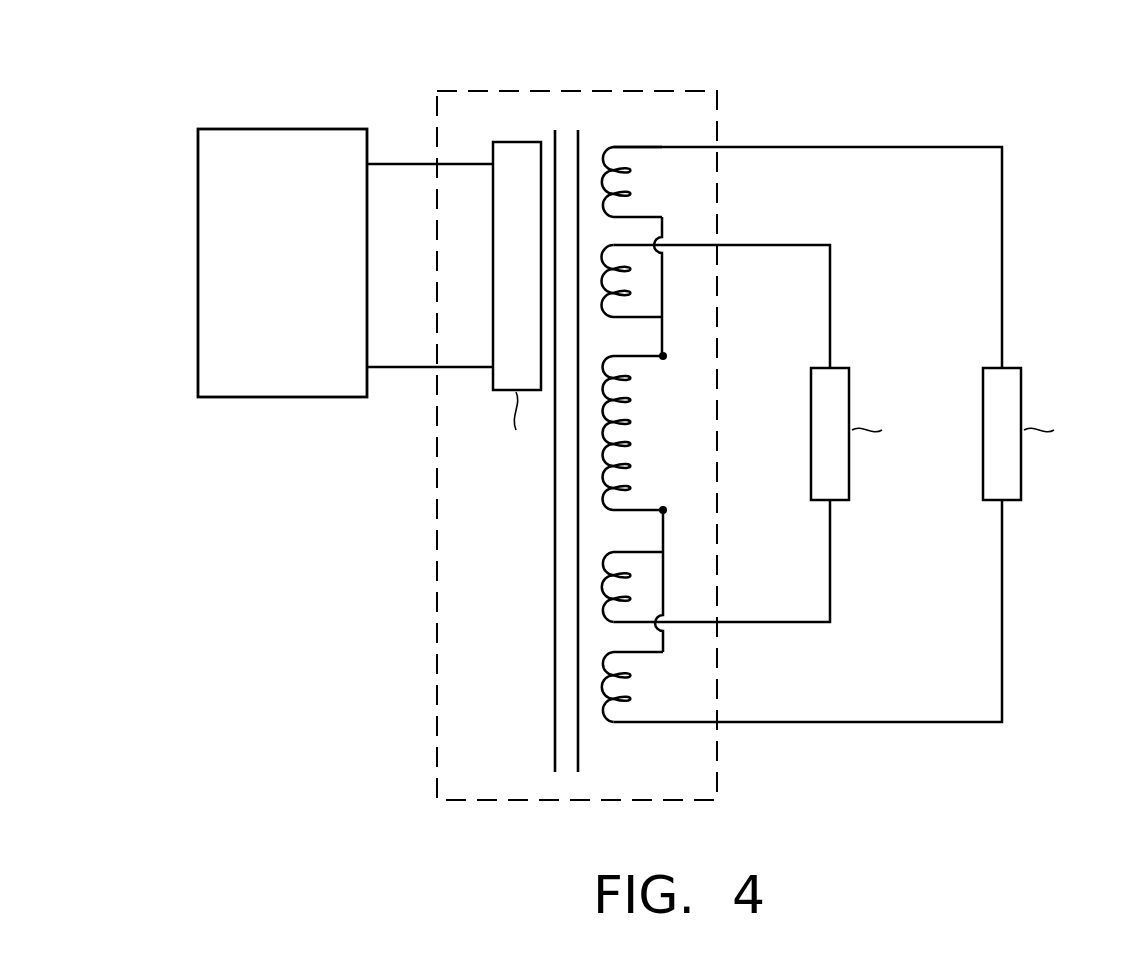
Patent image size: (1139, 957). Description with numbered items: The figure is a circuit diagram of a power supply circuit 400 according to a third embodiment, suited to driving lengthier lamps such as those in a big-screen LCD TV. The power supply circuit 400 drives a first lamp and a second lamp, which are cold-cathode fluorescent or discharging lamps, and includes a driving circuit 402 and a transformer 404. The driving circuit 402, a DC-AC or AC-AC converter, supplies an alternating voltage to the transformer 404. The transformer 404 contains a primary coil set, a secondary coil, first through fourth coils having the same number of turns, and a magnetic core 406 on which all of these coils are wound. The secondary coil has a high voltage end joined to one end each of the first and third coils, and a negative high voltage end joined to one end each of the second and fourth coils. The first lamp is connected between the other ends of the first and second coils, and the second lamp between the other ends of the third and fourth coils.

The power supply circuit 400 is at (1073, 51).
The driving circuit 402 is at (283, 128).
The transformer 404 is at (591, 90).
The magnetic core 406 is at (555, 727).